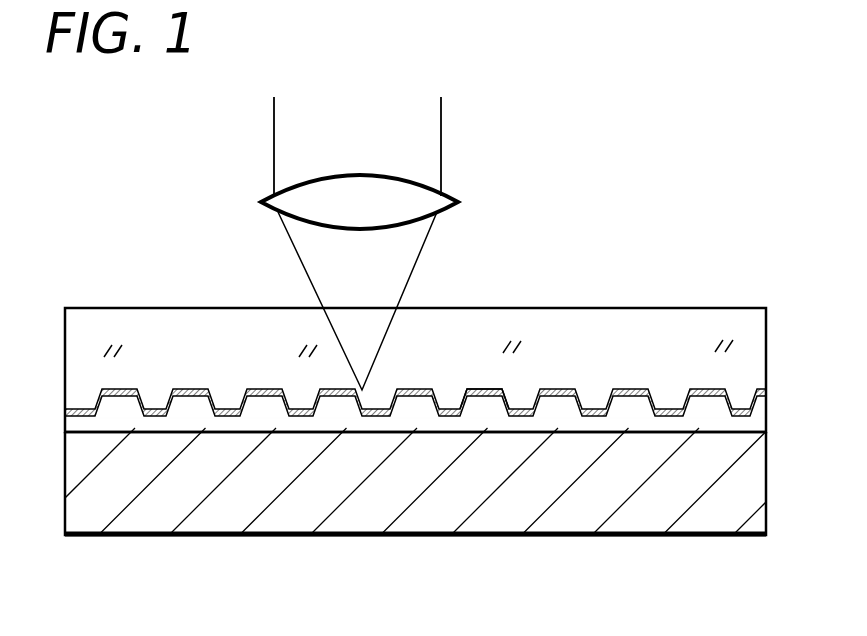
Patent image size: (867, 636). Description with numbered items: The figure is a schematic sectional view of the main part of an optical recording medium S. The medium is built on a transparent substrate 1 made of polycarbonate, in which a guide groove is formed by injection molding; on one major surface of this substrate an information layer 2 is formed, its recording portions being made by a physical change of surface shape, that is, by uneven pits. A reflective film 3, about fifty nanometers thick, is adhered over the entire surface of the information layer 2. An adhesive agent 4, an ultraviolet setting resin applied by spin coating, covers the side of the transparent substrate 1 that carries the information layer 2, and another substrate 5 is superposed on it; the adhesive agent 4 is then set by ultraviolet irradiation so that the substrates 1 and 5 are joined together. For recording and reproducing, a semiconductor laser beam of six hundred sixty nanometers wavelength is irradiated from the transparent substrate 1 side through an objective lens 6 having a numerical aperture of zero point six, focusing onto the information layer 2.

The transparent substrate 1 is at (556, 306).
The information layer 2 is at (482, 397).
The reflective film 3 is at (273, 403).
The adhesive agent 4 is at (233, 425).
The substrate 5 is at (648, 518).
The objective lens 6 is at (380, 197).
The optical recording medium S is at (663, 306).